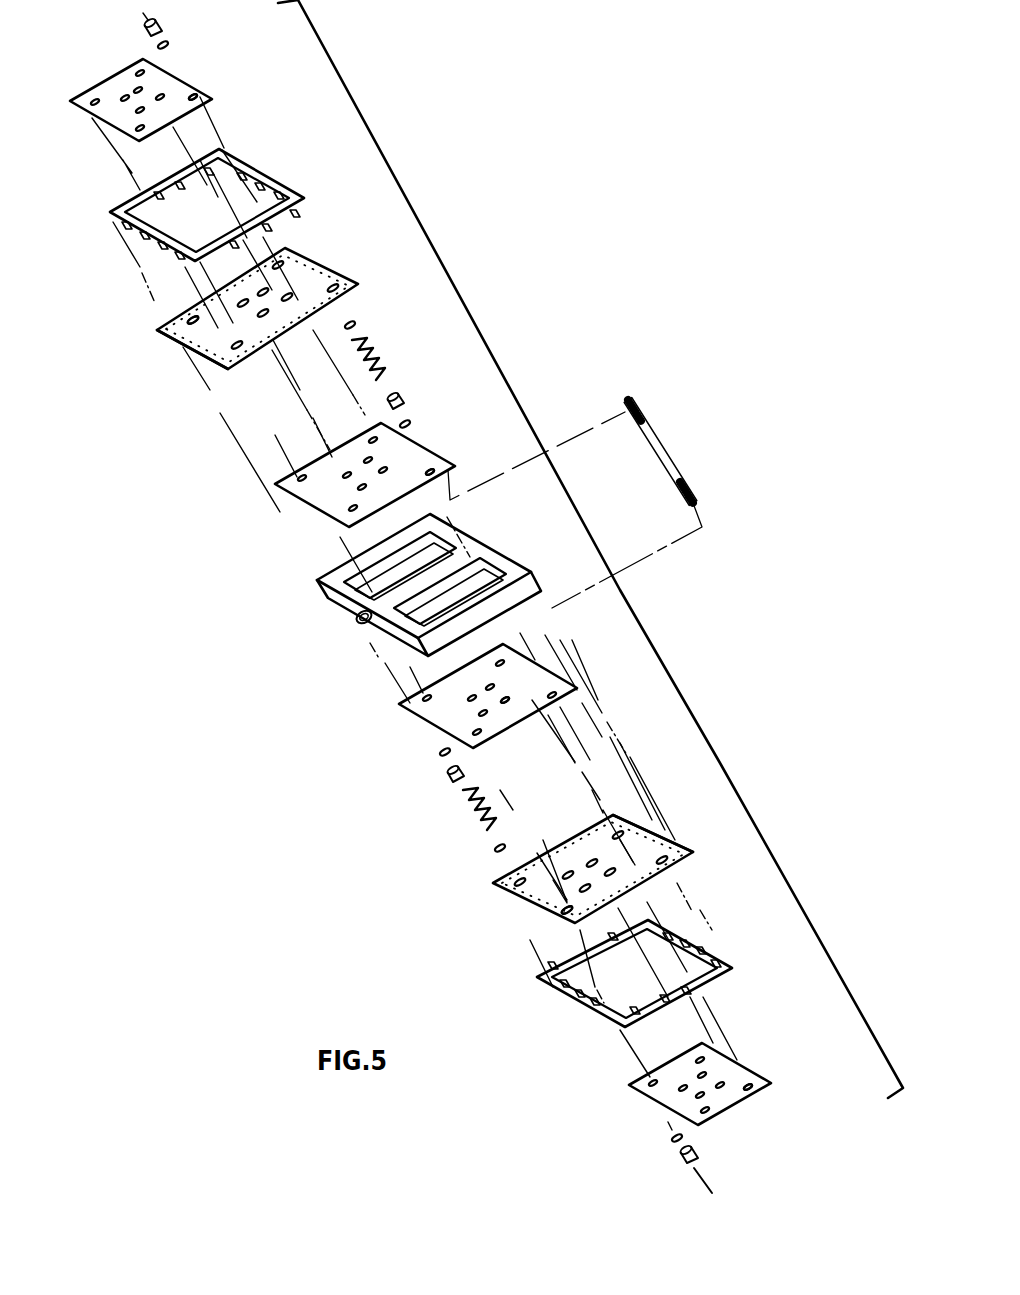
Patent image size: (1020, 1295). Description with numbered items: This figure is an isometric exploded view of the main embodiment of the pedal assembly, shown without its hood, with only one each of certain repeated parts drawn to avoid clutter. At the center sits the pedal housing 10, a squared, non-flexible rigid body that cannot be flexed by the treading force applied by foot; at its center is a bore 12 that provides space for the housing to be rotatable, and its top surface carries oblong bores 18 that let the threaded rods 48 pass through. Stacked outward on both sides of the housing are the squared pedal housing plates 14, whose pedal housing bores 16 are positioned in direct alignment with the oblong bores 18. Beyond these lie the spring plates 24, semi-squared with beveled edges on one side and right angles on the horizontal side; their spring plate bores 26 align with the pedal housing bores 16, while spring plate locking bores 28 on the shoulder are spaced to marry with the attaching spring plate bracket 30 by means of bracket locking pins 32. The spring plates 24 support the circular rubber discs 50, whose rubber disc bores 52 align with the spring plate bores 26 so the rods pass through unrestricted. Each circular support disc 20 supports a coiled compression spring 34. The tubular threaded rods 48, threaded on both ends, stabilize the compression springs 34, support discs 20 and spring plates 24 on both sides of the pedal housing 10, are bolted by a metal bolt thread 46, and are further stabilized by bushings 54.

The pedal housing 10 is at (467, 555).
The bore 12 is at (363, 622).
The pedal housing plates 14 is at (430, 460).
The pedal housing bores 16 is at (437, 467).
The oblong bores 18 is at (470, 592).
The support disc 20 is at (170, 44).
The spring plates 24 is at (347, 273).
The spring plate bores 26 is at (195, 318).
The spring plate locking bores 28 is at (170, 338).
The spring plate bracket 30 is at (290, 187).
The bracket locking pins 32 is at (189, 197).
The compression springs 34 is at (373, 342).
The bolt thread 46 is at (170, 30).
The threaded rods 48 is at (655, 430).
The rubber discs 50 is at (108, 108).
The rubber disc bores 52 is at (195, 91).
The bushings 54 is at (398, 396).